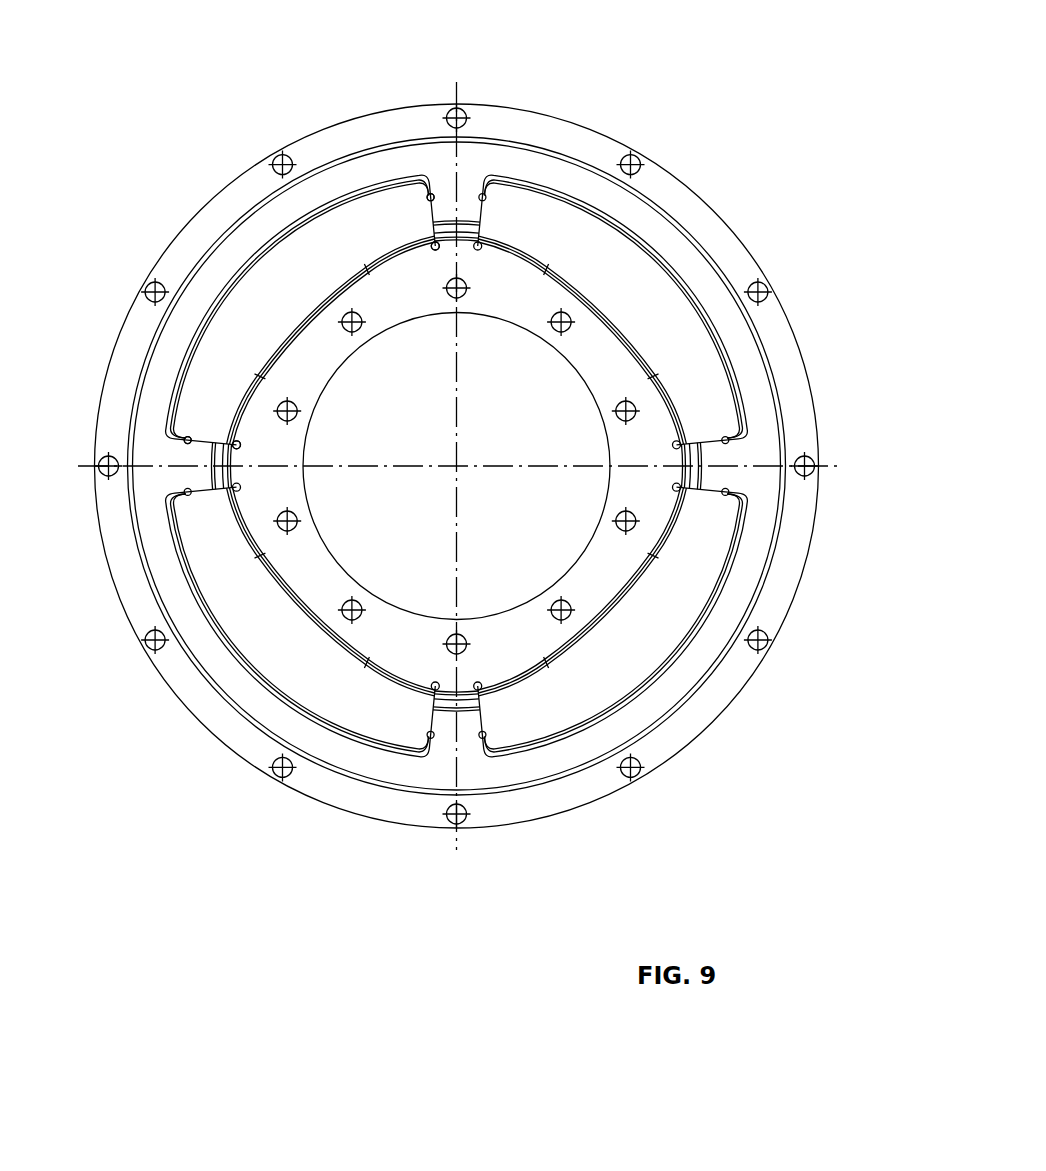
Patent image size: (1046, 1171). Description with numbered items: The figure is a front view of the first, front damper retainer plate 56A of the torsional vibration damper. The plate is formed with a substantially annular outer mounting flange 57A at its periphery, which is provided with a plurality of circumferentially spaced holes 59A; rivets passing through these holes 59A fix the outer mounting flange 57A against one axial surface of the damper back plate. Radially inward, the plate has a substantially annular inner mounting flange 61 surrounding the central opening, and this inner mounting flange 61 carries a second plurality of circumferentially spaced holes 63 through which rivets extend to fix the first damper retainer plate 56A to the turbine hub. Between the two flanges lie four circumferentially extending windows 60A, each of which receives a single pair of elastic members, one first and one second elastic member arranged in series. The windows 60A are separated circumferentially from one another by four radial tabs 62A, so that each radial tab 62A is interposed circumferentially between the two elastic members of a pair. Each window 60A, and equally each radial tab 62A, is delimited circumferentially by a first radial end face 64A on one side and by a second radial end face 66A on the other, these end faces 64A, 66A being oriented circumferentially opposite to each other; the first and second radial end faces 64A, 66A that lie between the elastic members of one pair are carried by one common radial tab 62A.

The first damper retainer plate 56A is at (627, 108).
The outer mounting flange 57A is at (127, 363).
The holes 59A is at (150, 636).
The windows 60A is at (280, 684).
The inner mounting flange 61 is at (315, 556).
The radial tabs 62A is at (443, 198).
The holes 63 is at (450, 640).
The first radial end face 64A is at (703, 500).
The second radial end face 66A is at (718, 438).